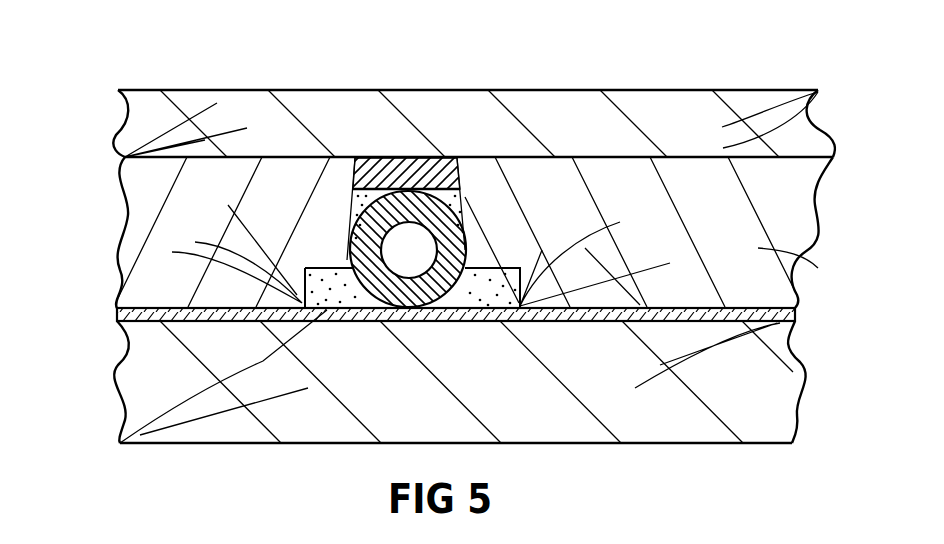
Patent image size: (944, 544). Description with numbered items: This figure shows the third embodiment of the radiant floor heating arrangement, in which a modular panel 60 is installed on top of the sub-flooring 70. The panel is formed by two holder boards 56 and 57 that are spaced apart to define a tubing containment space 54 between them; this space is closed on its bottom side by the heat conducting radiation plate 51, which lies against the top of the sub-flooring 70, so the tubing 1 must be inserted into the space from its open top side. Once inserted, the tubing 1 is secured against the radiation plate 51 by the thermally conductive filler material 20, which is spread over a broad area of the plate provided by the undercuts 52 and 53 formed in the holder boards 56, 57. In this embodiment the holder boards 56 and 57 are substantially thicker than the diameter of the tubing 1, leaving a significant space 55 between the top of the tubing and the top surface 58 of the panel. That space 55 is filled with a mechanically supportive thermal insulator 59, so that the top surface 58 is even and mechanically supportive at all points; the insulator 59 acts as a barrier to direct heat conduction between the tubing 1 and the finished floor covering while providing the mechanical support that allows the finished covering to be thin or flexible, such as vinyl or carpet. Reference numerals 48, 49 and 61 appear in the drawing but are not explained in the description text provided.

The tubing 1 is at (353, 211).
The filler material 20 is at (335, 293).
The ring outer surface 48 is at (468, 249).
The ring side 49 is at (358, 230).
The radiation plate 51 is at (415, 315).
The undercut 52 is at (500, 322).
The undercut 53 is at (223, 376).
The tubing containment space 54 is at (400, 137).
The space 55 is at (488, 188).
The holder board 56 is at (805, 272).
The holder board 57 is at (44, 288).
The top surface 58 is at (238, 152).
The thermal insulator 59 is at (380, 165).
The modular panel 60 is at (102, 214).
The upper plate 61 is at (107, 117).
The sub-flooring 70 is at (697, 443).